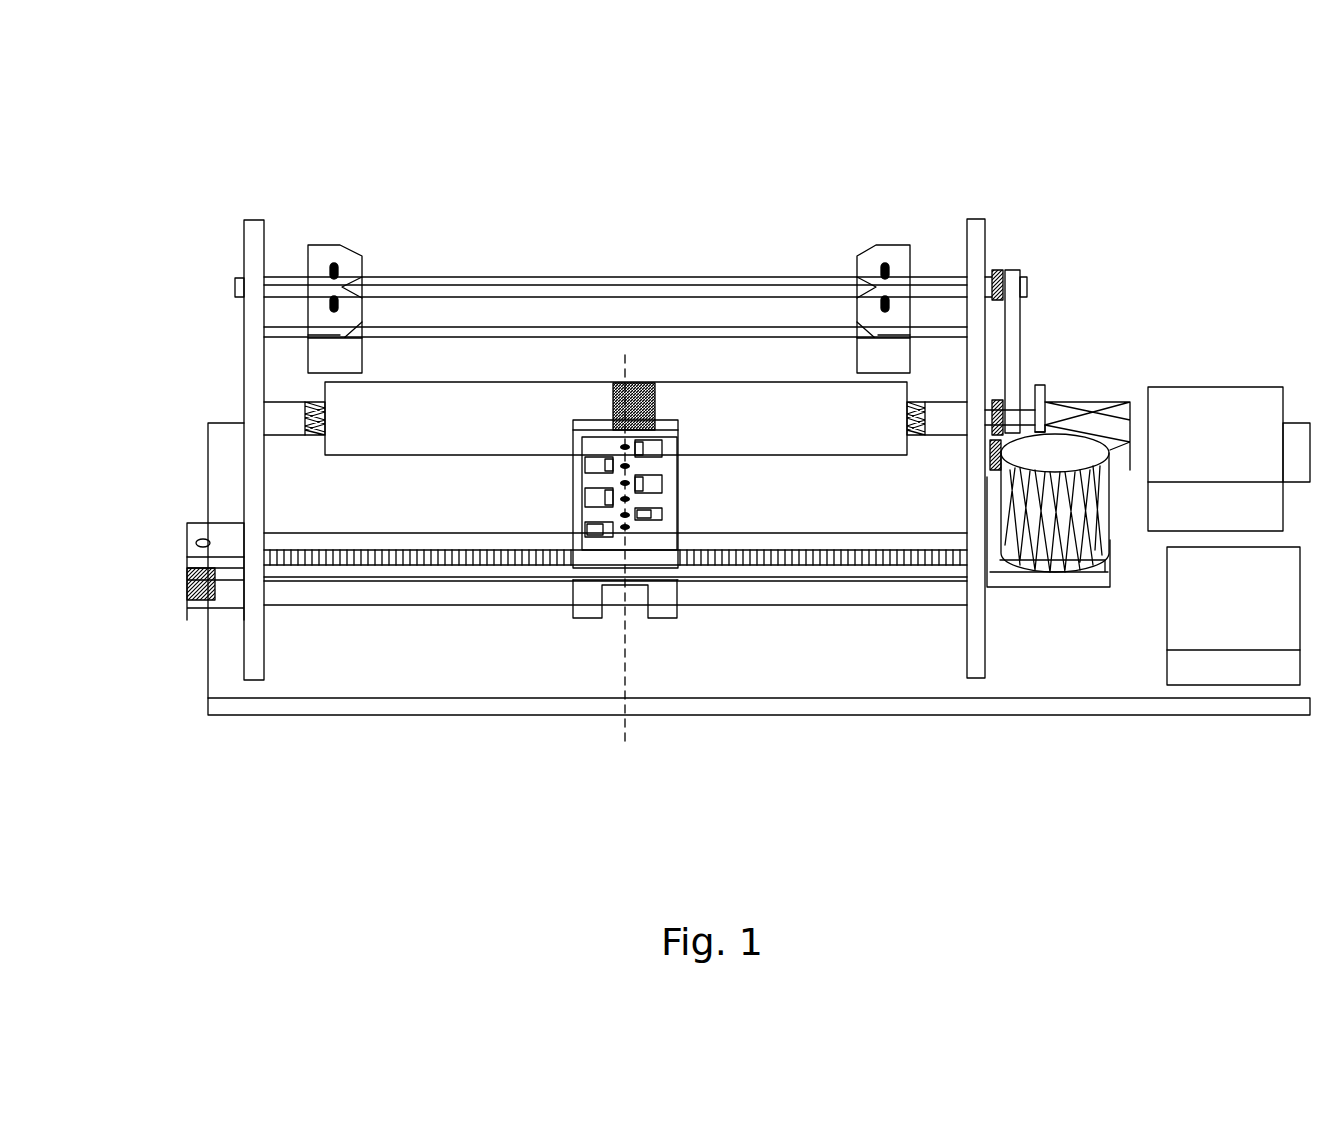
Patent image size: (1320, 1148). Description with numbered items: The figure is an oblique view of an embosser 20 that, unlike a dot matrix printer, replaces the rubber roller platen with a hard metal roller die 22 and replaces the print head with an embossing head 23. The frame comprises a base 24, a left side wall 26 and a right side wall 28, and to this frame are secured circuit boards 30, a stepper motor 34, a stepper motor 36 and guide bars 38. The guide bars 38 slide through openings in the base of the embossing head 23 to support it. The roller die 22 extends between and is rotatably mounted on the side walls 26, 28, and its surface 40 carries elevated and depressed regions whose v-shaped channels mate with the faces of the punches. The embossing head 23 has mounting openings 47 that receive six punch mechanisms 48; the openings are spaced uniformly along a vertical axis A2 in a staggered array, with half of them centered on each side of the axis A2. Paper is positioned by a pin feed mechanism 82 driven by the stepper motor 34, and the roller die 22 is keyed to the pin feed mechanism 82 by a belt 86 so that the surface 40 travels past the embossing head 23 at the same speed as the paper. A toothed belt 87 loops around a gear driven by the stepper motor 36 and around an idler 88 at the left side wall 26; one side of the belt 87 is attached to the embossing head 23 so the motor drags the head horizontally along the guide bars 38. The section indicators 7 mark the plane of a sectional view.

The embosser 20 is at (1100, 196).
The roller die 22 is at (441, 370).
The embossing head 23 is at (586, 630).
The base 24 is at (242, 705).
The left side wall 26 is at (253, 230).
The right side wall 28 is at (975, 233).
The circuit boards 30 is at (1243, 420).
The stepper motor 34 is at (1128, 420).
The stepper motor 36 is at (1052, 448).
The guide bars 38 is at (833, 540).
The surface 40 is at (510, 405).
The mounting openings 47 is at (605, 530).
The punch mechanisms 48 is at (595, 490).
The section line 7 is at (615, 173).
The pin feed mechanism 82 is at (350, 255).
The belt 86 is at (1013, 338).
The toothed belt 87 is at (325, 550).
The idler 88 is at (197, 598).
The vertical axis A2 is at (625, 657).